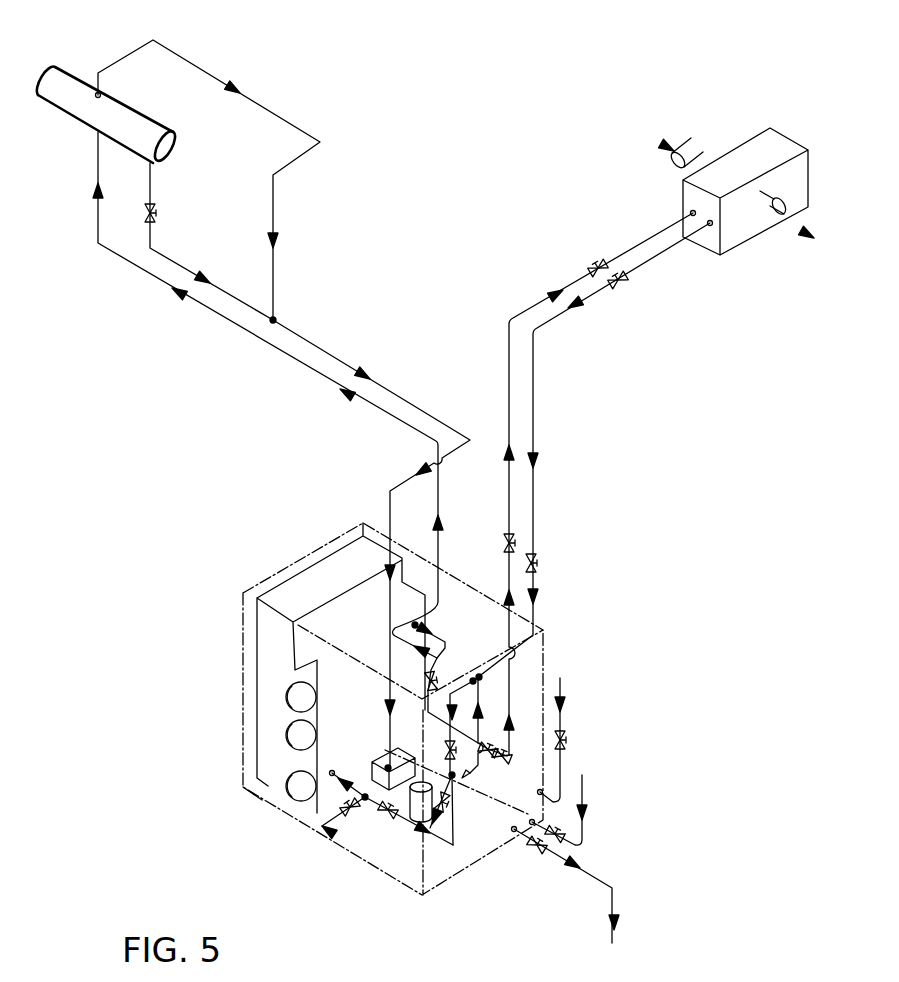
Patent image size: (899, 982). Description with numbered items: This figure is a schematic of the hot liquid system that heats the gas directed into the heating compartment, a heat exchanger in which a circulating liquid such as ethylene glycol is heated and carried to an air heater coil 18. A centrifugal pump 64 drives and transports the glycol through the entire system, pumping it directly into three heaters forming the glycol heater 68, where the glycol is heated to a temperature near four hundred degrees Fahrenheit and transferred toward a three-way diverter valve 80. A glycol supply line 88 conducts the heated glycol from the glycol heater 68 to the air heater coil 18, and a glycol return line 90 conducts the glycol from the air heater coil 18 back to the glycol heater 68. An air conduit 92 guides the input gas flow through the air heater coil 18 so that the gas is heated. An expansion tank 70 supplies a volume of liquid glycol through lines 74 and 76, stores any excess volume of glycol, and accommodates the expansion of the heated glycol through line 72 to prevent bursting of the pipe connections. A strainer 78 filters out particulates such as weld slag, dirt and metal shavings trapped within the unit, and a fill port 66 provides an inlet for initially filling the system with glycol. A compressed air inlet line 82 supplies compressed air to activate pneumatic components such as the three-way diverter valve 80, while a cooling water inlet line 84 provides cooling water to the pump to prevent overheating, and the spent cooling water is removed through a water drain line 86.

The air heater coil 18 is at (750, 138).
The centrifugal pump 64 is at (402, 823).
The fill port 66 is at (332, 823).
The glycol heater 68 is at (288, 773).
The expansion tank 70 is at (80, 103).
The line 72 is at (133, 263).
The line 74 is at (275, 110).
The line 76 is at (323, 347).
The strainer 78 is at (440, 833).
The three-way diverter valve 80 is at (508, 758).
The compressed air inlet line 82 is at (562, 688).
The cooling water inlet line 84 is at (583, 792).
The water drain line 86 is at (600, 880).
The glycol supply line 88 is at (540, 300).
The glycol return line 90 is at (593, 290).
The air conduit 92 is at (683, 172).